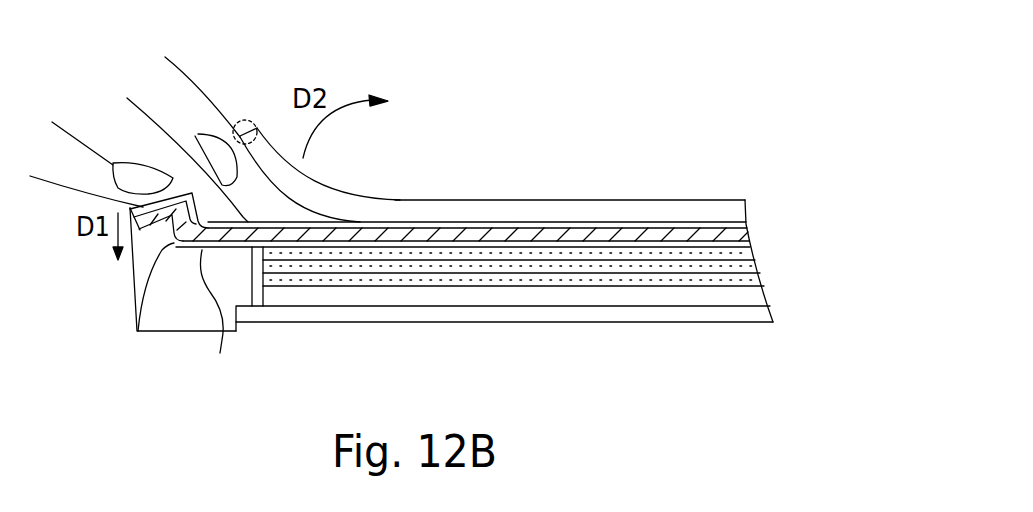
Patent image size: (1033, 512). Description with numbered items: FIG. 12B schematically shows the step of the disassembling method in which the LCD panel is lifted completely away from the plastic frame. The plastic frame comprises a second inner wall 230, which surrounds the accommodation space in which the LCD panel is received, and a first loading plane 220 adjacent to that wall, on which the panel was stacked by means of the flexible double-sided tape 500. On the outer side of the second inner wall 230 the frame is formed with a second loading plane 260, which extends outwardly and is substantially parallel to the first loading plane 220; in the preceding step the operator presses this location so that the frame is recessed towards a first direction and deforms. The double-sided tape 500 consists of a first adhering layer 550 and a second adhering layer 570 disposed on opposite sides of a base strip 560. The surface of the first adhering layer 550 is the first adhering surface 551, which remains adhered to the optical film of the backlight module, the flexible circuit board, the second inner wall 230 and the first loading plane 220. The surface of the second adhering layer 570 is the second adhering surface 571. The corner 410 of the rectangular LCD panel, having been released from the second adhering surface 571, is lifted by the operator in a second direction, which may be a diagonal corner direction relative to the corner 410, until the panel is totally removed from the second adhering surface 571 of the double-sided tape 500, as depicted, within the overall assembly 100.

The display device 100 is at (757, 66).
The first loading plane 220 is at (486, 319).
The second inner wall 230 is at (141, 294).
The second loading plane 260 is at (145, 248).
The corner 410 is at (248, 119).
The double-sided tape 500 is at (663, 122).
The first adhering layer 550 is at (465, 245).
The first adhering surface 551 is at (680, 250).
The base strip 560 is at (530, 235).
The second adhering layer 570 is at (610, 225).
The second adhering surface 571 is at (192, 193).